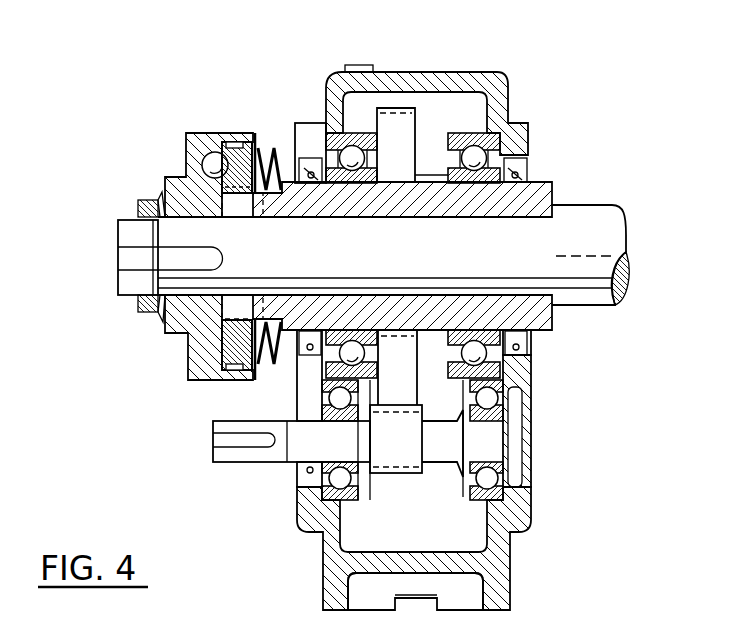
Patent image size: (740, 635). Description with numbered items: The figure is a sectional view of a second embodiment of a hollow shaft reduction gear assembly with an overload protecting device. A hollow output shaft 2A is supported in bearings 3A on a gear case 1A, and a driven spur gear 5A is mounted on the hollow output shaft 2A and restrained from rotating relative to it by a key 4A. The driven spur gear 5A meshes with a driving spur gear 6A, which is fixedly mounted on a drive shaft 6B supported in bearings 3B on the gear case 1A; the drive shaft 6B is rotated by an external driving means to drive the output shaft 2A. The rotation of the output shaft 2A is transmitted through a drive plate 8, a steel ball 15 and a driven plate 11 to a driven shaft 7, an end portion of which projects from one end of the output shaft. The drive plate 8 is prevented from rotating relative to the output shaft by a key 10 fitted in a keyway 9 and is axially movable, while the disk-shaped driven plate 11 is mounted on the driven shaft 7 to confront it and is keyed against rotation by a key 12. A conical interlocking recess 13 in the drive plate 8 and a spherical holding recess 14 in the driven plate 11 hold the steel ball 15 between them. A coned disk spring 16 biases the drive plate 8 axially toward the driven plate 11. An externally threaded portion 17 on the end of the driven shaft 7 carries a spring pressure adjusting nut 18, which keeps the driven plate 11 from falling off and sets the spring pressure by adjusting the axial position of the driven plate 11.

The gear case 1A is at (305, 140).
The hollow output shaft 2A is at (540, 197).
The bearings 3A is at (323, 137).
The bearings 3B is at (312, 497).
The key 4A is at (397, 345).
The driven spur gear 5A is at (402, 137).
The driving spur gear 6A is at (400, 474).
The drive shaft 6B is at (230, 455).
The driven shaft 7 is at (578, 273).
The drive plate 8 is at (232, 352).
The keyway 9 is at (288, 213).
The key 10 is at (245, 220).
The driven plate 11 is at (183, 315).
The key 12 is at (132, 259).
The conical interlocking recess 13 is at (243, 133).
The spherical holding recess 14 is at (203, 160).
The steel ball 15 is at (186, 133).
The coned disk spring 16 is at (279, 357).
The externally threaded portion 17 is at (125, 297).
The spring pressure adjusting nut 18 is at (142, 313).